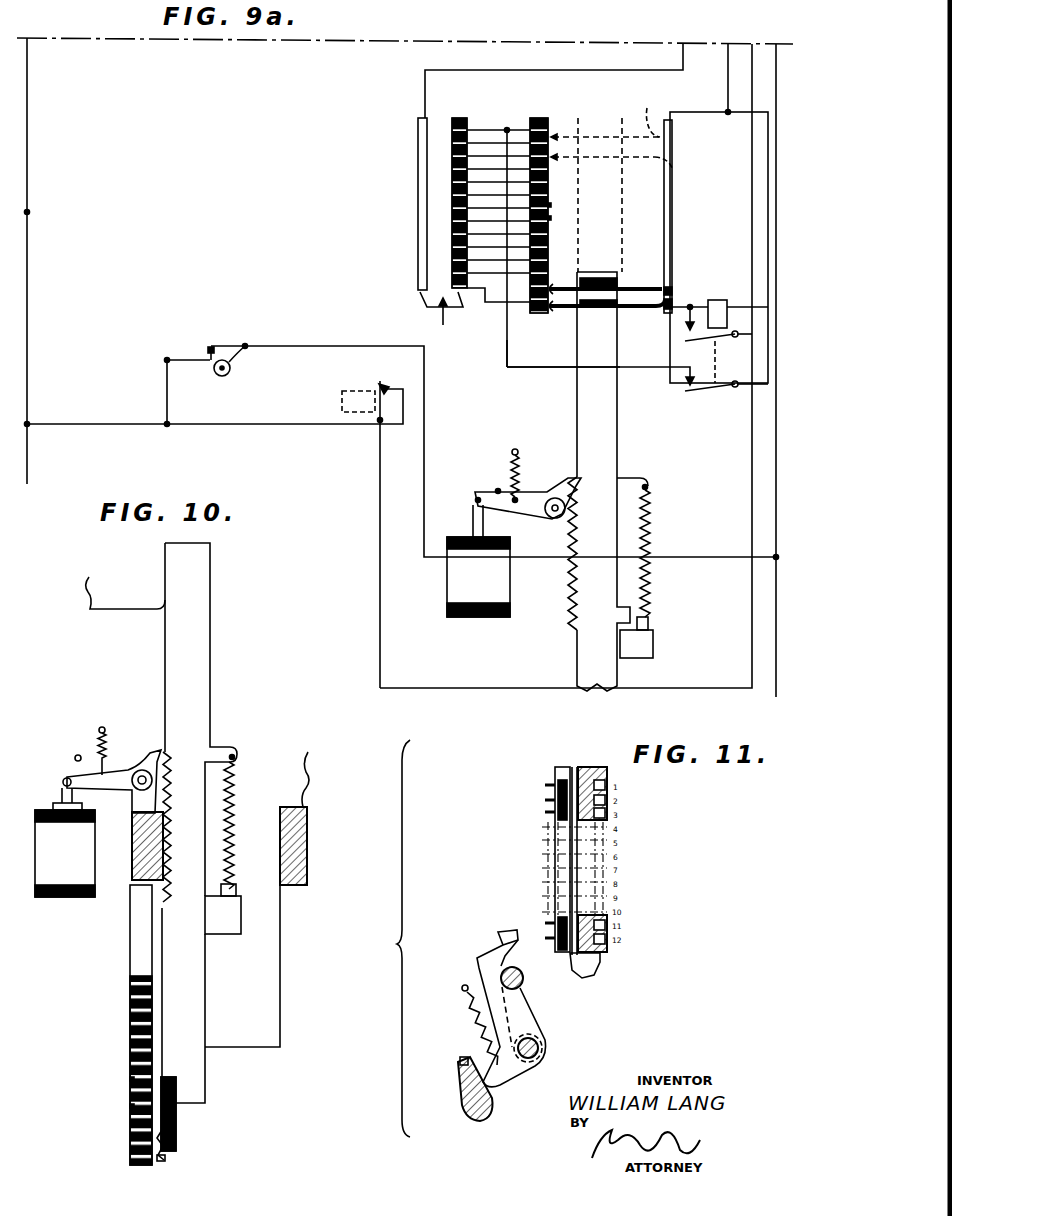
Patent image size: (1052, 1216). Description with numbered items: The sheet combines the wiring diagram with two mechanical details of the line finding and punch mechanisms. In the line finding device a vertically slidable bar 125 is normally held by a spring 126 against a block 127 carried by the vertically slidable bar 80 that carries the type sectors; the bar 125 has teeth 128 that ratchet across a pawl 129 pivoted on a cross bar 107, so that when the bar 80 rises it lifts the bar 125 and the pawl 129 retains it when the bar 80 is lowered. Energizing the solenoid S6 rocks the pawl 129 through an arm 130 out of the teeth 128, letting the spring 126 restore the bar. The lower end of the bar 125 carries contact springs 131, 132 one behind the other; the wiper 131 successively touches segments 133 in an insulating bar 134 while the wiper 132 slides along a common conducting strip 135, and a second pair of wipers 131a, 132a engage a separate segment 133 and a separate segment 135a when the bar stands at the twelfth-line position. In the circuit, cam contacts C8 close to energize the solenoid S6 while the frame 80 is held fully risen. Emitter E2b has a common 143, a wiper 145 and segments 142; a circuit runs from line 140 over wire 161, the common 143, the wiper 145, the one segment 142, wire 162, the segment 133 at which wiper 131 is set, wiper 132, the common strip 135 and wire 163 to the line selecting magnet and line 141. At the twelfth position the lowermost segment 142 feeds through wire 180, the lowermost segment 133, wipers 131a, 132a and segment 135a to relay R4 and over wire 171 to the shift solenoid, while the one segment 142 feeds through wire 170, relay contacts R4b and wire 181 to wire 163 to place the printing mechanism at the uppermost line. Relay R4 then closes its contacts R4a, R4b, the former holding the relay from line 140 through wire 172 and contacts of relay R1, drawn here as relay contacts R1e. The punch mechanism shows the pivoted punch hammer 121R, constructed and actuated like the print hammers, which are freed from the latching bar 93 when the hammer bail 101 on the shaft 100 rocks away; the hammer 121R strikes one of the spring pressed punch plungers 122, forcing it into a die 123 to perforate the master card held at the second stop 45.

In FIG. 9A, the vertically slidable bar 125 is at (577, 405).
In FIG. 10, the vertically slidable bar 125 is at (185, 645).
In FIG. 9A, the spring 126 is at (650, 583).
In FIG. 10, the spring 126 is at (237, 800).
In FIG. 9A, the block 127 is at (653, 640).
In FIG. 10, the block 127 is at (228, 934).
In FIG. 9A, the teeth 128 is at (578, 604).
In FIG. 10, the teeth 128 is at (172, 818).
In FIG. 9A, the pawl 129 is at (566, 480).
In FIG. 10, the pawl 129 is at (148, 755).
In FIG. 10, the arm 130 is at (90, 775).
In FIG. 9A, the contact spring 131 is at (556, 131).
In FIG. 10, the contact spring 131 is at (176, 1141).
In FIG. 9A, the contact spring 132 is at (662, 284).
In FIG. 10, the contact spring 132 is at (213, 1115).
In FIG. 9A, the second wiper 131a is at (558, 311).
In FIG. 10, the second wiper 131a is at (165, 1163).
In FIG. 9A, the wiper 132a is at (672, 168).
In FIG. 10, the wiper 132a is at (222, 1163).
In FIG. 9A, the segments 133 is at (551, 218).
In FIG. 10, the segments 133 is at (130, 1106).
In FIG. 9A, the insulating bar 134 is at (540, 118).
In FIG. 10, the insulating bar 134 is at (137, 950).
In FIG. 9A, the common conducting strip 135 is at (672, 196).
In FIG. 9A, the separate segment 135a is at (673, 303).
In FIG. 9A, the line 140 is at (27, 450).
In FIG. 9A, the line 141 is at (776, 500).
In FIG. 9A, the segment 142 is at (452, 156).
In FIG. 9A, the common 143 is at (418, 127).
In FIG. 9A, the wiper 145 is at (420, 302).
In FIG. 9A, the wire 161 is at (683, 58).
In FIG. 9A, the wire 162 is at (516, 143).
In FIG. 9A, the wire 163 is at (728, 83).
In FIG. 9A, the wire 170 is at (507, 358).
In FIG. 9A, the wire 171 is at (768, 140).
In FIG. 9A, the wire 172 is at (233, 424).
In FIG. 9A, the wire 180 is at (518, 303).
In FIG. 9A, the wire 181 is at (776, 209).
In FIG. 9A, the cam contacts C8 is at (240, 352).
In FIG. 9A, the relay R1 is at (342, 401).
In FIG. 9A, the relay contact R1e is at (384, 376).
In FIG. 9A, the relay R4 is at (717, 312).
In FIG. 9A, the relay contacts R4a is at (686, 340).
In FIG. 9A, the relay contacts R4b is at (687, 392).
In FIG. 9A, the emitter E2b is at (444, 319).
In FIG. 9A, the solenoid S6 is at (447, 585).
In FIG. 10, the solenoid S6 is at (58, 897).
In FIG. 10, the cross bar 107 is at (307, 841).
In FIG. 10, the vertically slidable bar 80 is at (282, 912).
In FIG. 11, the punch plungers 122 is at (545, 812).
In FIG. 11, the die 123 is at (585, 764).
In FIG. 11, the second stop 45 is at (600, 960).
In FIG. 11, the punch hammer 121R is at (486, 950).
In FIG. 11, the hammer bail 101 is at (525, 982).
In FIG. 11, the shaft 100 is at (542, 1048).
In FIG. 11, the latching bar 93 is at (458, 1065).